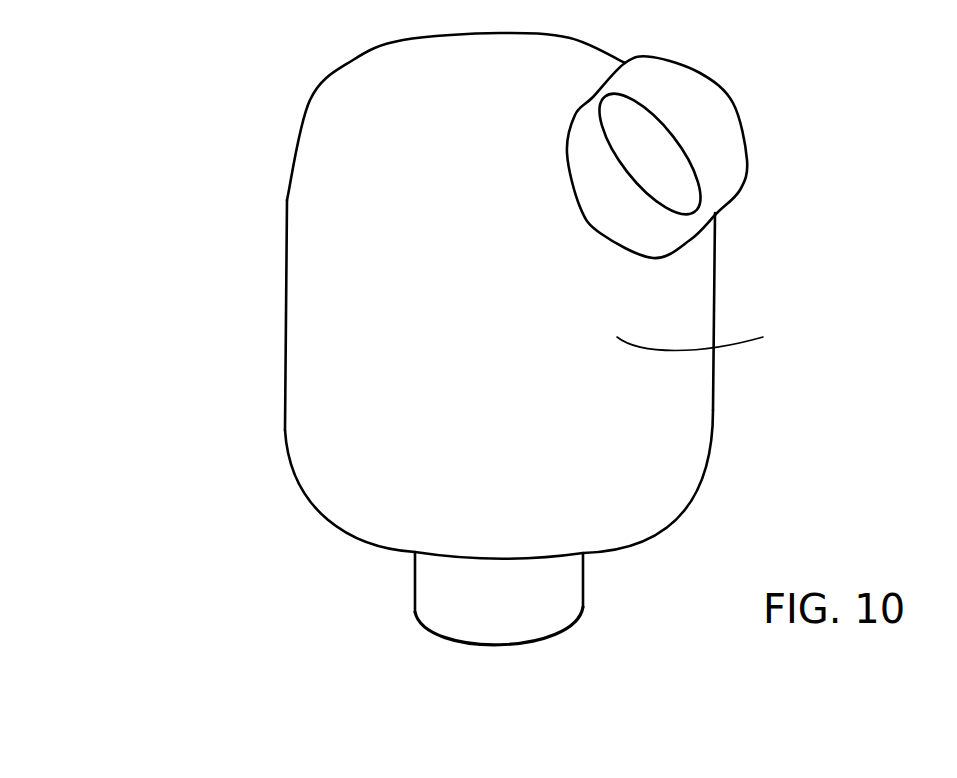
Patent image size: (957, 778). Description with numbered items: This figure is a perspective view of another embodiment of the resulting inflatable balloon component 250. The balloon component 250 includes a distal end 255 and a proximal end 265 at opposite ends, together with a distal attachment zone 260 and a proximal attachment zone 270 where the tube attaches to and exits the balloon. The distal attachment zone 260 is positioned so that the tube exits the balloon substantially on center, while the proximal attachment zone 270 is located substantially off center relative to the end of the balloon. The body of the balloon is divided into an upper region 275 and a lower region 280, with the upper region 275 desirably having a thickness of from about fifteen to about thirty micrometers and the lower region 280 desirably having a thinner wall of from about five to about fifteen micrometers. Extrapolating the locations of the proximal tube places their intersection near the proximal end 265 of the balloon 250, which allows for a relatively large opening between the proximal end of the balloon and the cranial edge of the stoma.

The inflatable balloon component 250 is at (812, 425).
The distal end 255 is at (524, 537).
The distal attachment zone 260 is at (578, 600).
The proximal end 265 is at (491, 98).
The proximal attachment zone 270 is at (705, 214).
The upper region 275 is at (714, 339).
The lower region 280 is at (287, 274).